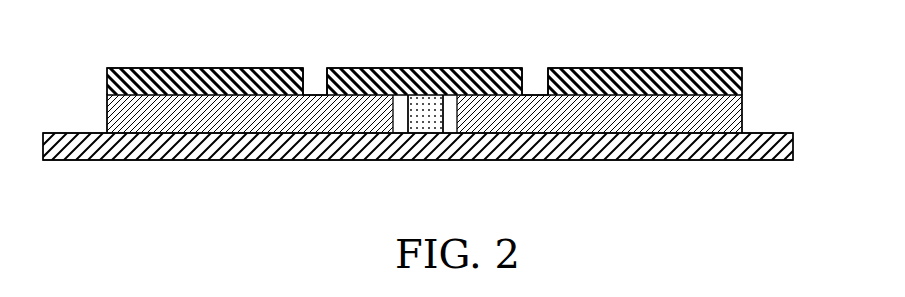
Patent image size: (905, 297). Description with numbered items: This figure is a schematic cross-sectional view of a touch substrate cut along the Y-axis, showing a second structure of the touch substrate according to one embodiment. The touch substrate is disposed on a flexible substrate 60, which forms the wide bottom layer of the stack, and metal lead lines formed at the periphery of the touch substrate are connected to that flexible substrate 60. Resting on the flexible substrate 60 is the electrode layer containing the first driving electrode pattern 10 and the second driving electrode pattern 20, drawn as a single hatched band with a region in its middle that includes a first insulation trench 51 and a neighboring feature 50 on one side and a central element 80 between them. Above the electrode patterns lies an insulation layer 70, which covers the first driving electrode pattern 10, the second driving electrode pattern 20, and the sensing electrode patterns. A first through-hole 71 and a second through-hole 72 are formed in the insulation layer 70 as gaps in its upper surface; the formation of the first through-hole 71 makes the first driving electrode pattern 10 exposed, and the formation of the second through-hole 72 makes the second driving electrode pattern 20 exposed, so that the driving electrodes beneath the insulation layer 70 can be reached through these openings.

The first driving electrode pattern 10 is at (106, 115).
The second driving electrode pattern 20 is at (743, 115).
The first opening 50 is at (397, 119).
The first insulation trench 51 is at (449, 118).
The flexible substrate 60 is at (794, 146).
The insulation layer 70 is at (743, 82).
The first through-hole 71 is at (315, 72).
The second through-hole 72 is at (535, 77).
The filling member 80 is at (423, 115).